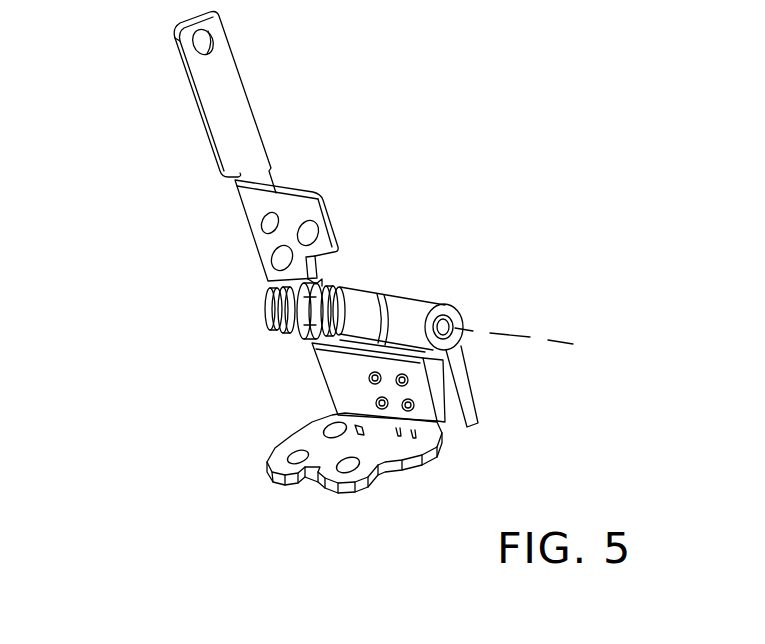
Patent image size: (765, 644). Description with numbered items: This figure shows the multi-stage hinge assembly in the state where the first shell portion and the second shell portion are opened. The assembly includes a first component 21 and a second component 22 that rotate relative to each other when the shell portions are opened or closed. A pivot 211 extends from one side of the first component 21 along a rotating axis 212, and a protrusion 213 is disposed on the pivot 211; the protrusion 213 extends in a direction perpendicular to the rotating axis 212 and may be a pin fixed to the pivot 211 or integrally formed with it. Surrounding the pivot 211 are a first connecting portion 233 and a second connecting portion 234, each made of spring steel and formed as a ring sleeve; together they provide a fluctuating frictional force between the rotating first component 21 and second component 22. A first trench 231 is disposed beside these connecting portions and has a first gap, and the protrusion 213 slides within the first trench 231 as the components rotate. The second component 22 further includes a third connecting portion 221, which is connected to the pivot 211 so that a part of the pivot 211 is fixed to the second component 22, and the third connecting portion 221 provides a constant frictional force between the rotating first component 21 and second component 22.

The first component 21 is at (183, 123).
The second component 22 is at (495, 417).
The pivot 211 is at (447, 322).
The rotating axis 212 is at (520, 334).
The protrusion 213 is at (320, 278).
The third connecting portion 221 is at (410, 308).
The first trench 231 is at (280, 288).
The first connecting portion 233 is at (314, 340).
The second connecting portion 234 is at (315, 339).